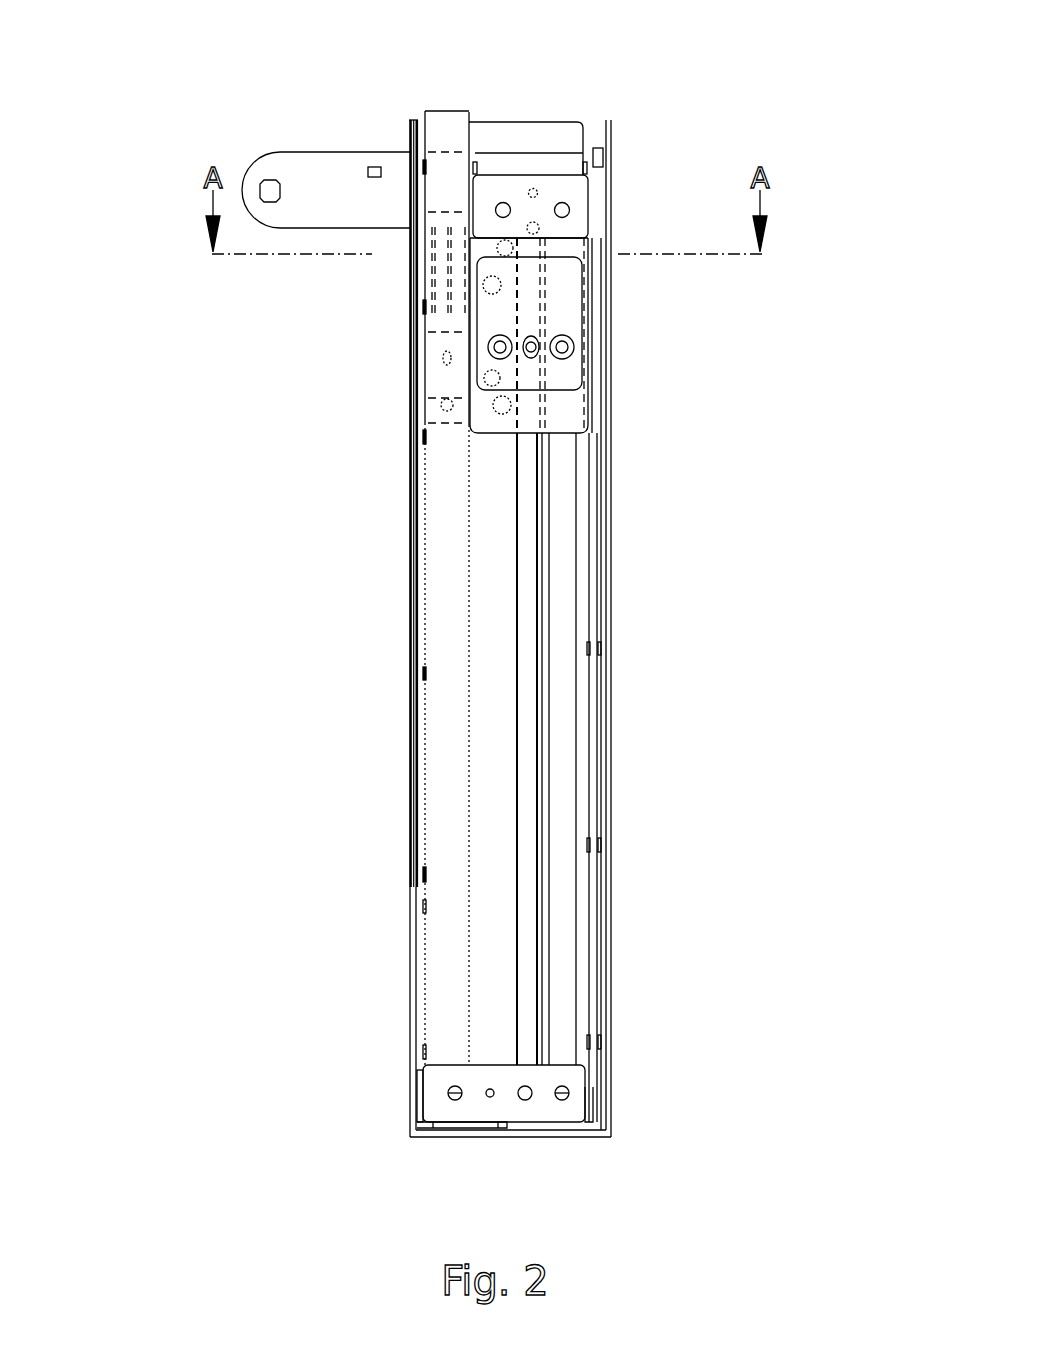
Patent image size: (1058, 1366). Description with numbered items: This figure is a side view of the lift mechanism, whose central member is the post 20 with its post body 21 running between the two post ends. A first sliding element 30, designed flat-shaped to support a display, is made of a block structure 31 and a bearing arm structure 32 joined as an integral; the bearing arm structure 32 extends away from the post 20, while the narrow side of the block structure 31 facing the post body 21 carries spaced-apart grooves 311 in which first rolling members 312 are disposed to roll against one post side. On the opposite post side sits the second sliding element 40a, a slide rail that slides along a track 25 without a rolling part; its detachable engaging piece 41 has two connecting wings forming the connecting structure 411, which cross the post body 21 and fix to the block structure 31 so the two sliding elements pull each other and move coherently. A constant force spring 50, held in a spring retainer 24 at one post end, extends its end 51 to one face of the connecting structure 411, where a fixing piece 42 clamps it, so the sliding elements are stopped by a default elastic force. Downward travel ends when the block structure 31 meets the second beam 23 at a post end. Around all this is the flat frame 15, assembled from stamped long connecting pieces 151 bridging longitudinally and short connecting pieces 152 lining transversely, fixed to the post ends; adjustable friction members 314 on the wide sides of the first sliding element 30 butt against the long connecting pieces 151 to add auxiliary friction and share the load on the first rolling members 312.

The flat frame 15 is at (393, 48).
The long connecting piece 151 is at (437, 112).
The short connecting piece 152 is at (503, 173).
The post 20 is at (308, 596).
The post body 21 is at (523, 610).
The second beam 23 is at (420, 1100).
The spring retainer 24 is at (585, 170).
The track 25 is at (567, 602).
The first sliding element 30 is at (272, 430).
The block structure 31 is at (410, 443).
The groove 311 is at (430, 268).
The first rolling member 312 is at (425, 320).
The adjustable friction member 314 is at (405, 358).
The bearing arm structure 32 is at (340, 218).
The second sliding element 40a is at (605, 240).
The engaging piece 41 is at (614, 351).
The connecting structure 411 is at (560, 433).
The fixing piece 42 is at (548, 394).
The constant force spring 50 is at (605, 105).
The end of constant force spring 51 is at (480, 330).